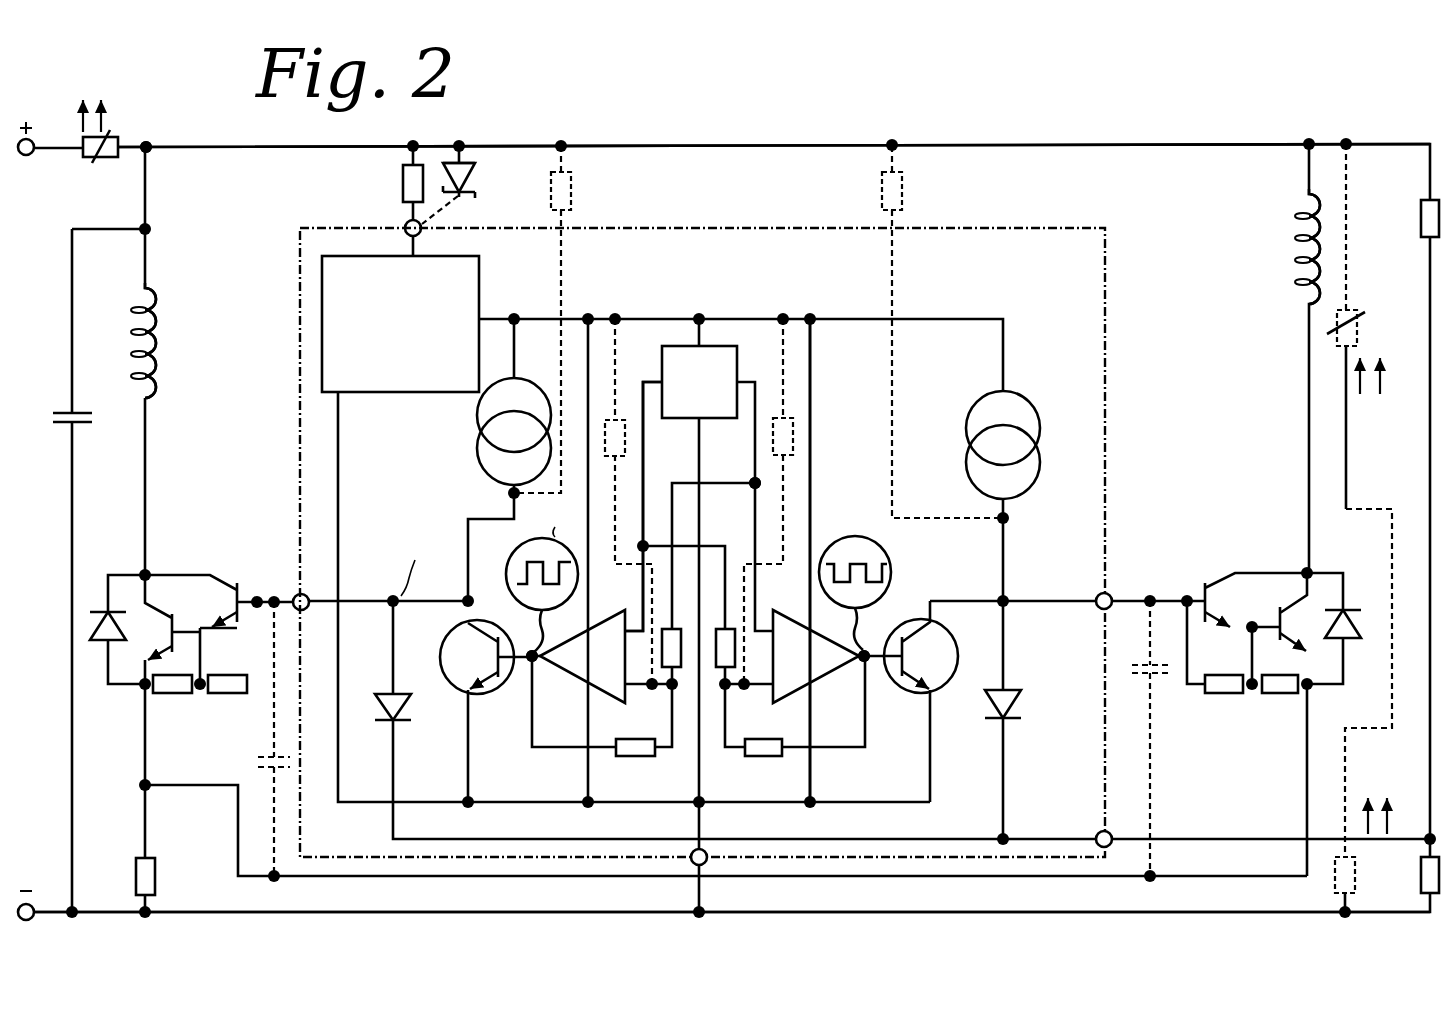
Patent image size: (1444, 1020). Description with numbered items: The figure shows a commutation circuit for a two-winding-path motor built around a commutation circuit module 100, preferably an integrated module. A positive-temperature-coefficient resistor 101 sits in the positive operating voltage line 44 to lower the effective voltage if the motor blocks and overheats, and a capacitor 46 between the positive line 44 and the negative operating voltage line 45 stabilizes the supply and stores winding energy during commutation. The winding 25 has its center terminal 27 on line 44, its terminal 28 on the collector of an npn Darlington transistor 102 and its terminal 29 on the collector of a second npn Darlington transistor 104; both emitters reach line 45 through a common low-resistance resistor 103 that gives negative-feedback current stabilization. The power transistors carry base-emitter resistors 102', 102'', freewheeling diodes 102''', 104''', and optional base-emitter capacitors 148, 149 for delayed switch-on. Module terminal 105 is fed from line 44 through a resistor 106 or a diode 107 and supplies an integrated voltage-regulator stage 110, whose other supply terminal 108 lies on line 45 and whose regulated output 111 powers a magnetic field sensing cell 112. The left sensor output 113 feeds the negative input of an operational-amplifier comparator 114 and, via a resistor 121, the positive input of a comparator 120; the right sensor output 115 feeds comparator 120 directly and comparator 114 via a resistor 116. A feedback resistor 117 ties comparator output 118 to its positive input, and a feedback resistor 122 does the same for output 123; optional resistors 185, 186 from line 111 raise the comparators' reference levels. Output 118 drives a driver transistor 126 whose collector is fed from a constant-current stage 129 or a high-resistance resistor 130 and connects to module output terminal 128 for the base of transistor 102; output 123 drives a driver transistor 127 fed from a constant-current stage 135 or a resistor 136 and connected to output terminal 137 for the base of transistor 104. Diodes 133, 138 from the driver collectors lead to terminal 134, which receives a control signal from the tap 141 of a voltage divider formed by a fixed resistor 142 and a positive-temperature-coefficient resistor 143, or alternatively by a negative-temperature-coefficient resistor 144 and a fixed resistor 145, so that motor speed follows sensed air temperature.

The positive-temperature-coefficient resistor 101 is at (82, 160).
The center terminal 27 is at (150, 151).
The winding 25 is at (144, 338).
The capacitor 46 is at (80, 425).
The npn Darlington transistor 102 is at (223, 568).
The terminal 28 is at (150, 572).
The module output terminal 128 is at (298, 592).
The freewheeling diode 102''' is at (112, 657).
The base-emitter resistor 102'' is at (726, 707).
The base-emitter resistor 102' is at (725, 707).
The capacitor 148 is at (256, 763).
The low-resistance resistor 103 is at (158, 878).
The resistor 106 is at (404, 185).
The diode 107 is at (478, 176).
The terminal 105 is at (424, 232).
The integrated voltage-regulator stage 110 is at (380, 338).
The high-resistance resistor 130 is at (576, 186).
The positive operating voltage line 44 is at (800, 146).
The high-resistance resistor 136 is at (880, 185).
The commutation circuit module 100 is at (1012, 224).
The fixed resistor 142 is at (1416, 216).
The negative-temperature-coefficient resistor 144 is at (1354, 316).
The Hall cell 112 is at (714, 346).
The output 111 is at (812, 319).
The resistor 185 is at (621, 414).
The resistor 186 is at (796, 439).
The integrated constant-current stage 129 is at (478, 456).
The constant-current stage 135 is at (968, 434).
The left Hall output 113 is at (641, 496).
The right Hall output 115 is at (750, 479).
The resistor 116 is at (656, 628).
The resistor 121 is at (738, 628).
The operational-amplifier comparator 114 is at (572, 668).
The operational-amplifier comparator 120 is at (787, 669).
The comparator output 118 is at (536, 665).
The output 123 is at (860, 664).
The driver transistor 126 is at (486, 697).
The diode 133 is at (386, 700).
The feedback resistor 117 is at (638, 758).
The feedback resistor 122 is at (762, 758).
The driver transistor 127 is at (912, 693).
The output terminal 137 is at (1096, 591).
The diode 138 is at (1011, 699).
The terminal 134 is at (1098, 829).
The capacitor 149 is at (1158, 676).
The npn Darlington transistor 104 is at (1247, 684).
The terminal 29 is at (1310, 572).
The freewheeling diode 104''' is at (1348, 646).
The tap 141 is at (1440, 800).
The PTC resistor 143 is at (1422, 876).
The fixed resistor 145 is at (1333, 881).
The terminal 108 is at (708, 864).
The negative operating voltage line 45 is at (446, 910).